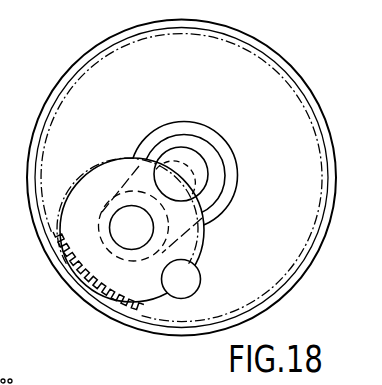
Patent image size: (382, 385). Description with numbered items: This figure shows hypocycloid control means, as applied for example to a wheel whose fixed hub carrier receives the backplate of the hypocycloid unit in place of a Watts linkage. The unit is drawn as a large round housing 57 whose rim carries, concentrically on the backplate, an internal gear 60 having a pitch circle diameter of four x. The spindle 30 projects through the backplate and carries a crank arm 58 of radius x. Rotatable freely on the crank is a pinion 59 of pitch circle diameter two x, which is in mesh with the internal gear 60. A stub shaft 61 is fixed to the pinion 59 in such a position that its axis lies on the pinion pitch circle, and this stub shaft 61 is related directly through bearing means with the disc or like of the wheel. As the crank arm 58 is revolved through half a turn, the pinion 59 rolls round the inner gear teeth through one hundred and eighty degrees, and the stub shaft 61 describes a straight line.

The housing 57 is at (272, 97).
The internal gear 60 is at (258, 60).
The spindle 30 is at (177, 155).
The crank arm 58 is at (215, 180).
The pinion 59 is at (110, 160).
The stub shaft 61 is at (200, 278).